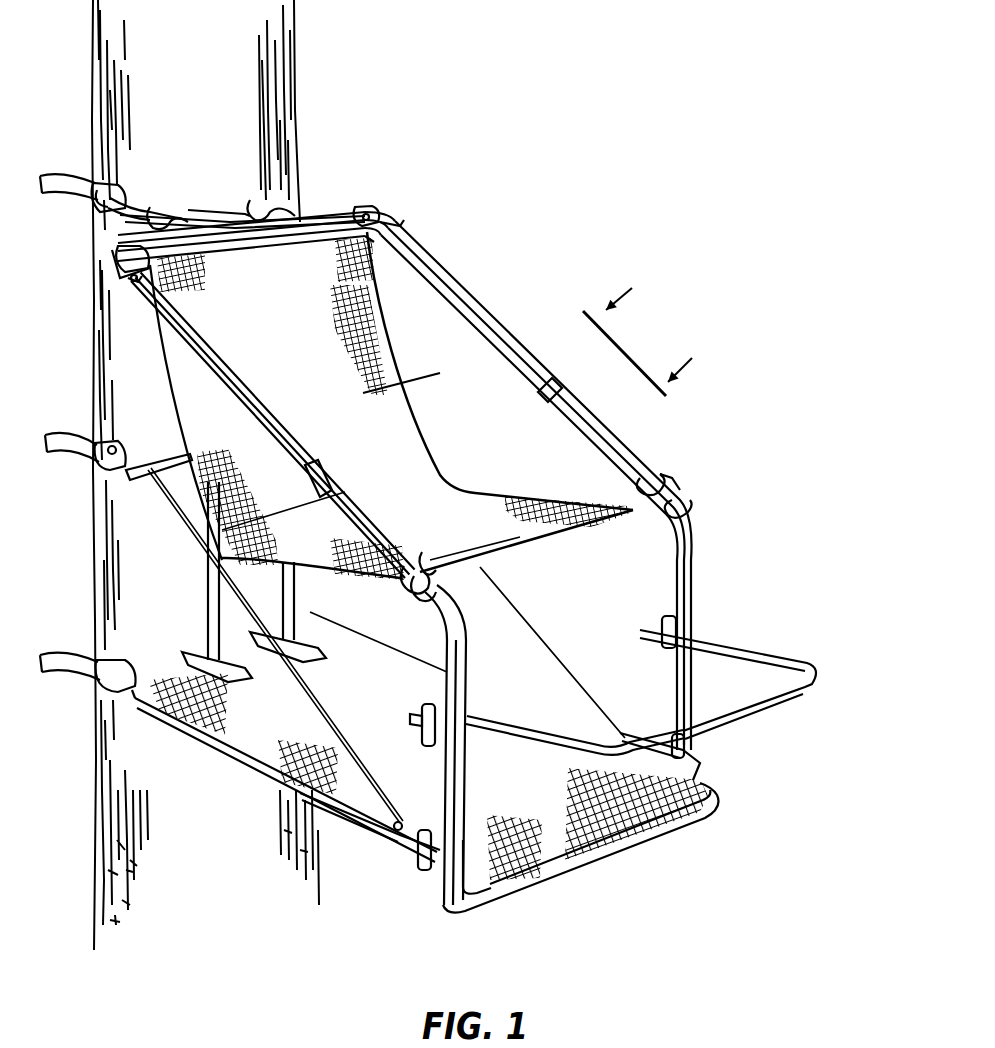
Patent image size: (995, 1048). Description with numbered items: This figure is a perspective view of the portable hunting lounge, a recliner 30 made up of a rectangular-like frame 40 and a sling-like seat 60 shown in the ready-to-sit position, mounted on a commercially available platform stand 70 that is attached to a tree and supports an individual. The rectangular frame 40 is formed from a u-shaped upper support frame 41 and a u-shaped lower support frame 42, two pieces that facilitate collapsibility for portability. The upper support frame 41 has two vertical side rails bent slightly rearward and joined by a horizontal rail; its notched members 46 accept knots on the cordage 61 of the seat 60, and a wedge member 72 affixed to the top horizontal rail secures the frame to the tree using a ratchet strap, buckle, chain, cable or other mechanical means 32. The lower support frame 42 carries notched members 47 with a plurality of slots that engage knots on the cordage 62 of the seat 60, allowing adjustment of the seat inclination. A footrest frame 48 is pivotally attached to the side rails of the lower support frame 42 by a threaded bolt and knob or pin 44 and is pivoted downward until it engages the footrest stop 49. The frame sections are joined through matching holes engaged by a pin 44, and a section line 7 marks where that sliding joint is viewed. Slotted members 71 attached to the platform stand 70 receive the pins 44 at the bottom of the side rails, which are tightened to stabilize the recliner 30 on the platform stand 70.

The recliner 30 is at (457, 550).
The mechanical means 32 is at (300, 193).
The rectangular frame 40 is at (452, 250).
The upper support frame 41 is at (518, 297).
The lower support frame 42 is at (726, 583).
The threaded bolt and knob or pin 44 is at (548, 425).
The notched members 46 is at (380, 212).
The notched members 47 is at (688, 515).
The footrest frame 48 is at (787, 693).
The footrest stop 49 is at (668, 610).
The seat 60 is at (393, 387).
The cordage 61 is at (403, 218).
The cordage 62 is at (697, 493).
The platform stand 70 is at (636, 858).
The slotted members 71 is at (700, 773).
The wedge member 72 is at (213, 219).
The section line 7- 7 is at (624, 354).